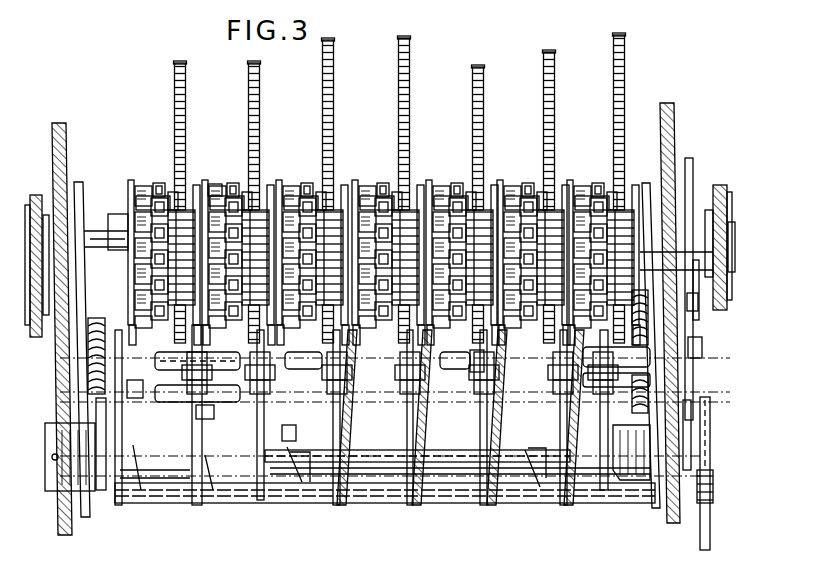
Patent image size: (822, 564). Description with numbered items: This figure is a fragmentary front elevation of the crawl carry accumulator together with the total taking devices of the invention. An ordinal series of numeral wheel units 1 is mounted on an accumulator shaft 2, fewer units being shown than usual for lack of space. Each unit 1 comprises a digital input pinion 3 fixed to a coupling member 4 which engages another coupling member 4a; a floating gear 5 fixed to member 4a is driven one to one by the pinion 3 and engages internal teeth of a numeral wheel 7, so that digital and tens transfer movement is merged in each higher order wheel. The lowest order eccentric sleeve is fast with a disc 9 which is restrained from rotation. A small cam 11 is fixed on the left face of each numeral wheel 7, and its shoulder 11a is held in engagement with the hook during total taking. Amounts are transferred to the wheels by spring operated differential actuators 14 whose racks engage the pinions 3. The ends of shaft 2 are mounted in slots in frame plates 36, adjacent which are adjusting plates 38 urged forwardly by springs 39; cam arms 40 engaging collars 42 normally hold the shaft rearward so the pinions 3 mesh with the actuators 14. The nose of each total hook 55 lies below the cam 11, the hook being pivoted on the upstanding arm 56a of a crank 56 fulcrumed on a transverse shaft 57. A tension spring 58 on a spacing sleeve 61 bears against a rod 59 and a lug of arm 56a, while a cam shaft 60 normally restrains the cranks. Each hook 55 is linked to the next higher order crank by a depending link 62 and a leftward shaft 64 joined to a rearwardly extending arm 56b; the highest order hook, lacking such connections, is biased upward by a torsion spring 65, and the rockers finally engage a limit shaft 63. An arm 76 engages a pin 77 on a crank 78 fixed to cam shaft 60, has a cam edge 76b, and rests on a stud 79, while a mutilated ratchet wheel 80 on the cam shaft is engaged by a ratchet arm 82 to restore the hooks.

The numeral wheel unit 1 is at (518, 176).
The accumulator shaft 2 is at (99, 240).
The digital input pinion 3 is at (409, 258).
The coupling member 4 is at (318, 184).
The coupling member 4a is at (231, 184).
The floating gear 5 is at (214, 186).
The numeral wheel 7 is at (340, 184).
The disc 9 is at (638, 182).
The cam 11 is at (270, 183).
The shoulder 11a is at (424, 308).
The differential actuator 14 is at (255, 104).
The frame plate 36 is at (62, 144).
The adjusting plate 38 is at (82, 190).
The spring 39 is at (90, 362).
The cam arm 40 is at (34, 195).
The collar 42 is at (86, 322).
The total hook 55 is at (333, 351).
The crank 56 is at (200, 500).
The upstanding arm 56a is at (205, 406).
The rearwardly extending arm 56b is at (418, 450).
The transverse shaft 57 is at (318, 484).
The tension spring 58 is at (214, 446).
The rod 59 is at (180, 400).
The cam shaft 60 is at (107, 474).
The spacing sleeve 61 is at (300, 478).
The link 62 is at (342, 437).
The limit shaft 63 is at (218, 360).
The shaft 64 is at (168, 493).
The torsion spring 65 is at (201, 356).
The arm 76 is at (692, 170).
The cam edge 76b is at (700, 323).
The pin 77 is at (698, 318).
The crank 78 is at (691, 406).
The stud 79 is at (702, 348).
The mutilated ratchet wheel 80 is at (713, 488).
The ratchet arm 82 is at (710, 527).